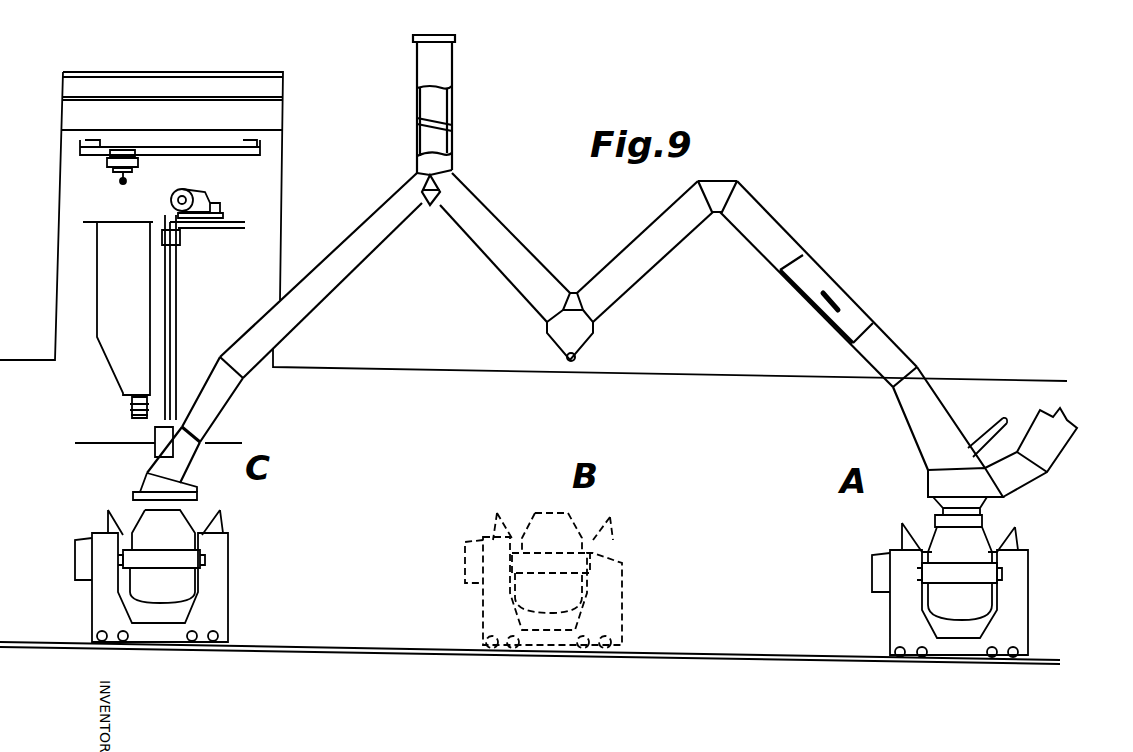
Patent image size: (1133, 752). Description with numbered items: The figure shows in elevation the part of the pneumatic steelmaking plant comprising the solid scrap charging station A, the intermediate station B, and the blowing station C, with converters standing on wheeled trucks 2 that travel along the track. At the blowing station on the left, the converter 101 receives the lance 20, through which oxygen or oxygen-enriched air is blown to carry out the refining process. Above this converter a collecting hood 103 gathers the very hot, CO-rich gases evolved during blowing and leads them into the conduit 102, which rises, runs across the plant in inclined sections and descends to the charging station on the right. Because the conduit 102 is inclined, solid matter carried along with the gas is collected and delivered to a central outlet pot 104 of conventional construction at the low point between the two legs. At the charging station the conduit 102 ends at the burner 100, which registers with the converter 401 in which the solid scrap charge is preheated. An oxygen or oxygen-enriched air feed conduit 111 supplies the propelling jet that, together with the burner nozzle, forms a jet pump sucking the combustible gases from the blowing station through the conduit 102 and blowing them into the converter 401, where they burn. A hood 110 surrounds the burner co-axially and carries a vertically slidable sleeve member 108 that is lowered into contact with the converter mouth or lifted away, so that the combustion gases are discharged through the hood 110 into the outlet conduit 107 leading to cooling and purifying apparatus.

The truck 2 is at (223, 607).
The lance 20 is at (173, 310).
The burner 100 is at (925, 478).
The converter 101 is at (175, 583).
The conduit 102 is at (343, 263).
The collecting hood 103 is at (157, 487).
The central outlet pot 104 is at (575, 352).
The outlet conduit 107 is at (1038, 440).
The sleeve member 108 is at (985, 522).
The hood 110 is at (957, 482).
The feed conduit 111 is at (980, 440).
The converter 401 is at (947, 598).